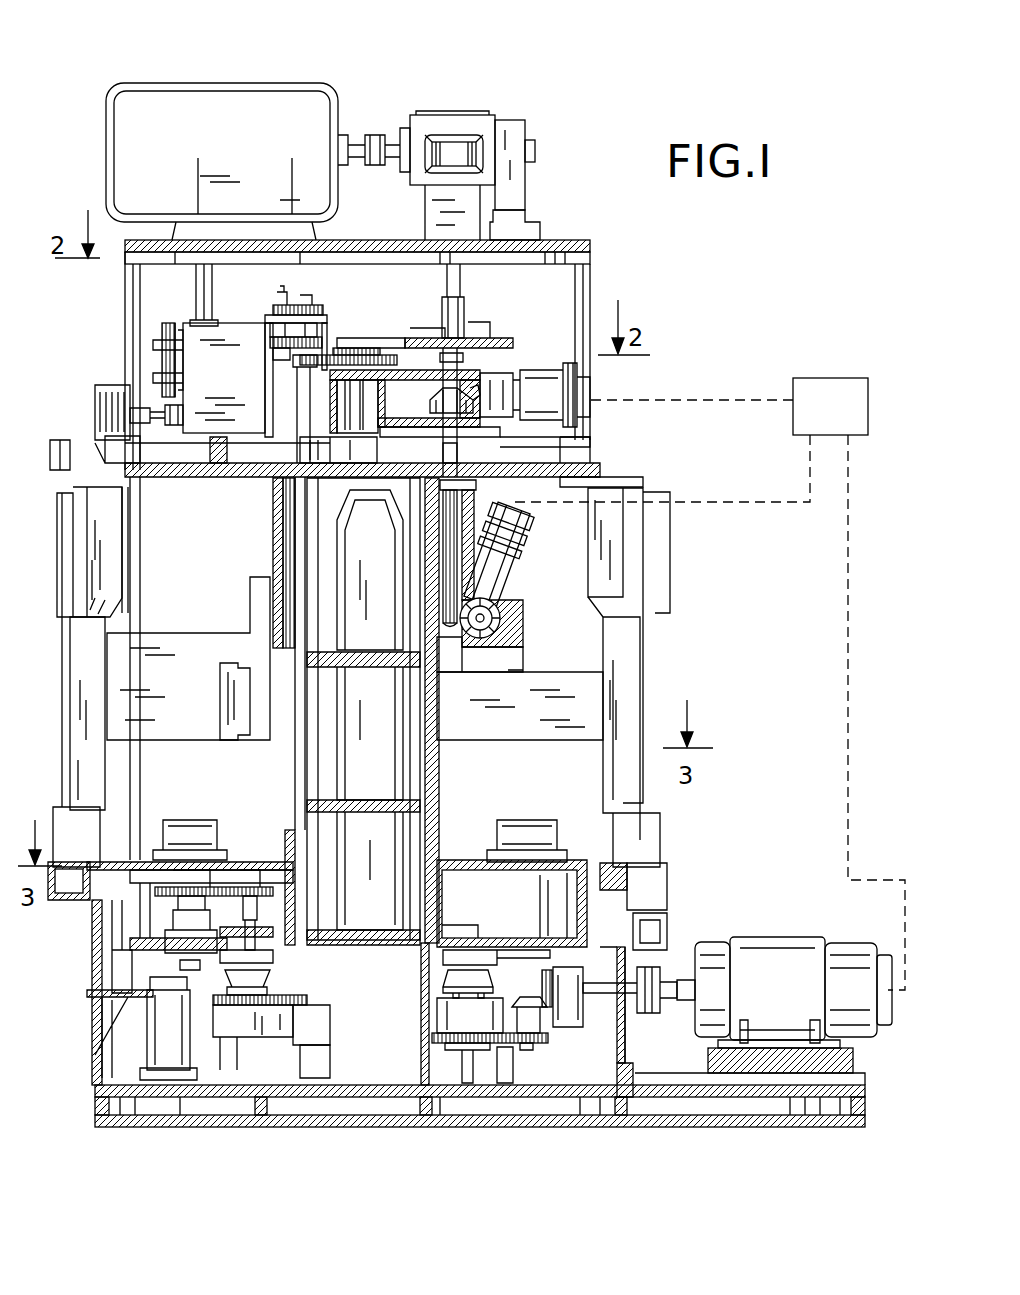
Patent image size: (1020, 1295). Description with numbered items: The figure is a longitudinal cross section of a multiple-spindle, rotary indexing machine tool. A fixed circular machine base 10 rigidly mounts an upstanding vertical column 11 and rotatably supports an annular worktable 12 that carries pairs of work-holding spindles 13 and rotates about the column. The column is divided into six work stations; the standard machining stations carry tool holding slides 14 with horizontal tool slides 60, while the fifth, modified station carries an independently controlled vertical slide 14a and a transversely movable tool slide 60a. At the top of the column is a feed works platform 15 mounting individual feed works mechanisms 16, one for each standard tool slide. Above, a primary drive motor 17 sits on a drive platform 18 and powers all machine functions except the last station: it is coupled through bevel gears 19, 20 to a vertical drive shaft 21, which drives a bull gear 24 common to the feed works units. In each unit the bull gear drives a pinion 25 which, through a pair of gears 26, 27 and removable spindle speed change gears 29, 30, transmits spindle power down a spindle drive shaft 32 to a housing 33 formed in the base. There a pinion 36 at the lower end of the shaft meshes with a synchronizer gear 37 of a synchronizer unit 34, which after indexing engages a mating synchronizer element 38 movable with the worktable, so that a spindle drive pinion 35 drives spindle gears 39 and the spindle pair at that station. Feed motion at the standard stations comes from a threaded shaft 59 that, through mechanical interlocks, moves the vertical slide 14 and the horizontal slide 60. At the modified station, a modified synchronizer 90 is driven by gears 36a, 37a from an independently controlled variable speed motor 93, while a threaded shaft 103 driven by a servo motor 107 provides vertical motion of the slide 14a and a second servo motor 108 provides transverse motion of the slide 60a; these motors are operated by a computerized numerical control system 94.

The machine base 10 is at (340, 1127).
The vertical column 11 is at (437, 768).
The worktable 12 is at (575, 913).
The work-holding spindles 13 is at (192, 818).
The tool holding slide 14 is at (255, 592).
The vertical slide 14a is at (467, 547).
The feed works platform 15 is at (590, 450).
The feed works mechanisms 16 is at (203, 335).
The primary drive motor 17 is at (213, 93).
The drive platform 18 is at (566, 242).
The bevel gear 19 is at (471, 140).
The bevel gear 20 is at (447, 163).
The vertical drive shaft 21 is at (458, 288).
The bull gear 24 is at (385, 365).
The pinion 25 is at (312, 362).
The gear 26 is at (318, 340).
The gear 27 is at (275, 343).
The spindle speed change gear 29 is at (277, 307).
The spindle speed change gear 30 is at (320, 312).
The spindle drive shaft 32 is at (302, 770).
The housing 33 is at (372, 1043).
The synchronizer unit 34 is at (305, 1023).
The spindle drive pinion 35 is at (248, 882).
The pinion 36 is at (318, 998).
The drive input gear 36a is at (545, 1040).
The synchronizer gear 37 is at (237, 1003).
The gear 37a is at (430, 1040).
The mating synchronizer element 38 is at (270, 960).
The spindle gears 39 is at (162, 885).
The threaded shaft 59 is at (278, 523).
The horizontal tool slide 60 is at (222, 697).
The transversely movable tool slide 60a is at (522, 668).
The modified synchronizer 90 is at (483, 1005).
The external drive motor 93 is at (768, 945).
The computerized numerical control system 94 is at (820, 378).
The threaded shaft 103 is at (445, 587).
The servo motor 107 is at (540, 378).
The second servo motor 108 is at (510, 550).